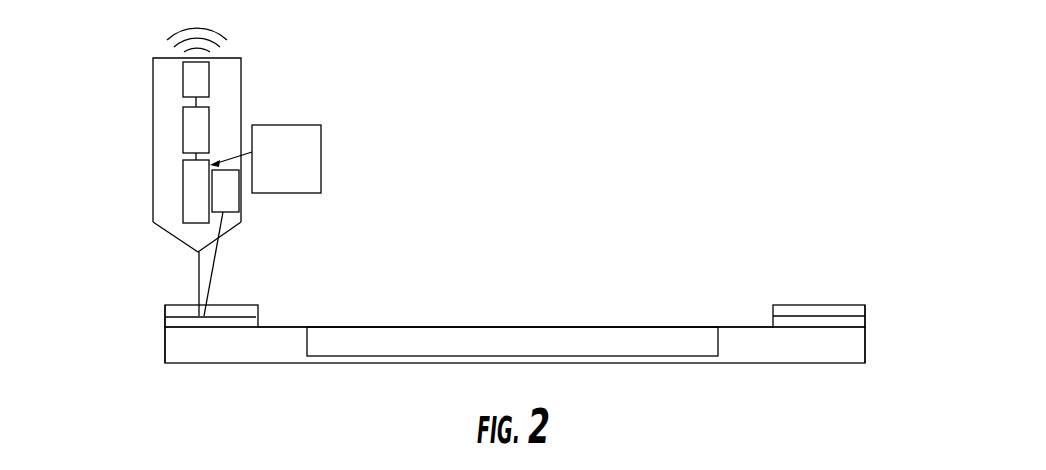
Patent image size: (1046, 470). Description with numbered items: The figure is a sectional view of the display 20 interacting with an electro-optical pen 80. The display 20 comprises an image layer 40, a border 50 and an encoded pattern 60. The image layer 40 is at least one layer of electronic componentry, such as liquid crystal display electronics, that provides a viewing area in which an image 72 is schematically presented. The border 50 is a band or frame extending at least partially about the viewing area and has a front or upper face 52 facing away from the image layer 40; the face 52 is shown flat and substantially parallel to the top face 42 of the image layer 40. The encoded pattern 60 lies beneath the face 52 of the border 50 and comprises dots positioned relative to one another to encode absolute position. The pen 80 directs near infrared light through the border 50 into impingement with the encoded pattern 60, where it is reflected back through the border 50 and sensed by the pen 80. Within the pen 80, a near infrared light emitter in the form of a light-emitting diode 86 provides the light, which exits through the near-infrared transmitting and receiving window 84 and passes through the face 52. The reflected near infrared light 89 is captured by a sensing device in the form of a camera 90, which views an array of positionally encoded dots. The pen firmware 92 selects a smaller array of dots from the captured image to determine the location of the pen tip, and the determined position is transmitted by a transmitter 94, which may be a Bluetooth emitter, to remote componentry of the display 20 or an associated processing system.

The display 20 is at (114, 272).
The image layer 40 is at (165, 352).
The top face of image layer 42 is at (290, 327).
The border 50 is at (156, 291).
The upper face of border 52 is at (250, 304).
The encoded pattern 60 is at (165, 325).
The image 72 is at (688, 328).
The electro-optical pen 80 is at (116, 95).
The near-infrared transmitting and receiving window 84 is at (213, 262).
The light-emitting diode 86 is at (237, 213).
The reflected near infrared light 89 is at (321, 147).
The camera 90 is at (183, 168).
The pen firmware 92 is at (209, 127).
The transmitter 94 is at (183, 90).